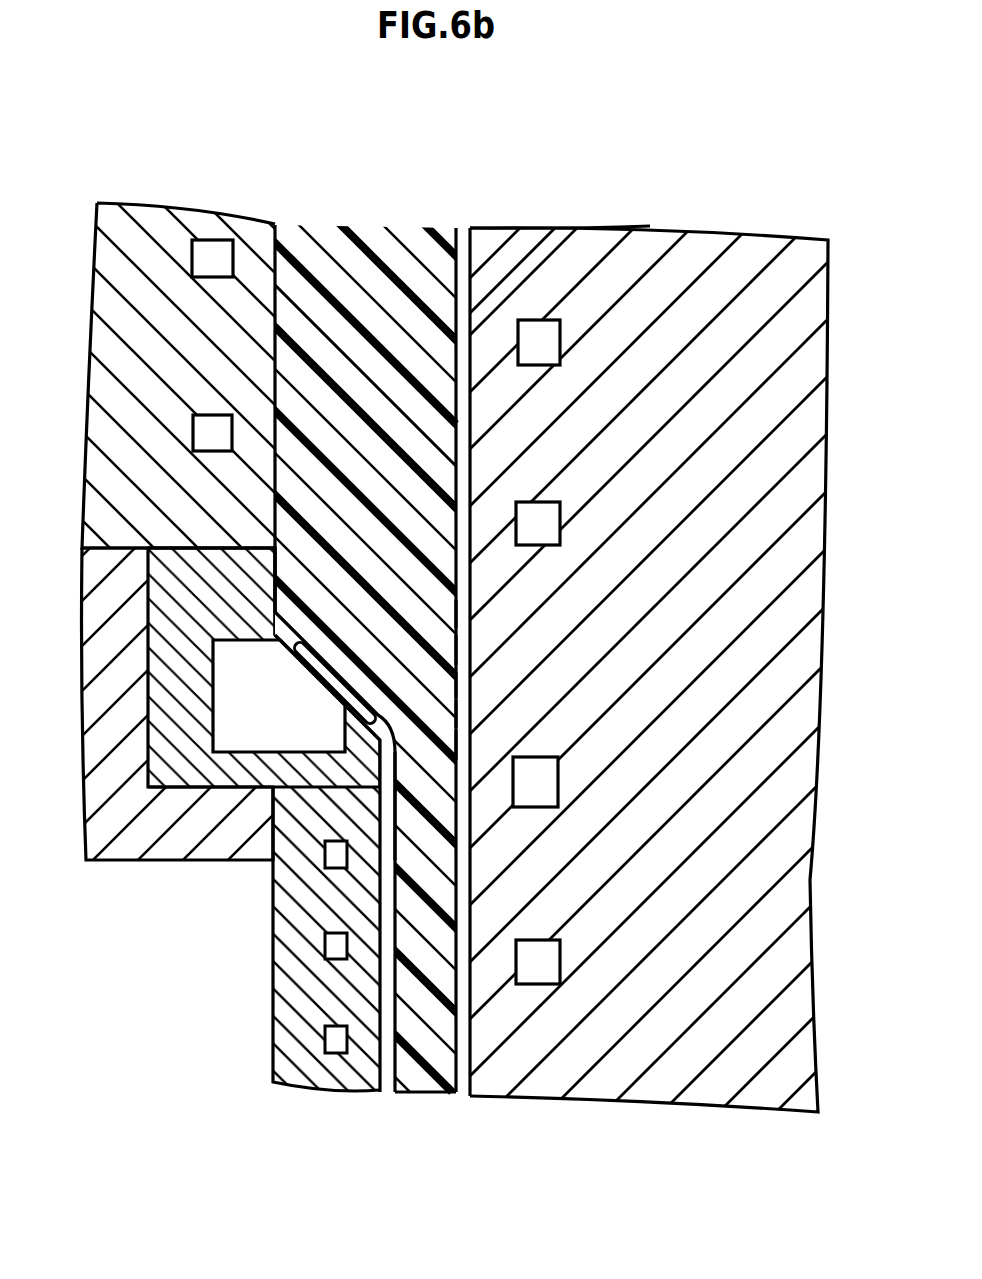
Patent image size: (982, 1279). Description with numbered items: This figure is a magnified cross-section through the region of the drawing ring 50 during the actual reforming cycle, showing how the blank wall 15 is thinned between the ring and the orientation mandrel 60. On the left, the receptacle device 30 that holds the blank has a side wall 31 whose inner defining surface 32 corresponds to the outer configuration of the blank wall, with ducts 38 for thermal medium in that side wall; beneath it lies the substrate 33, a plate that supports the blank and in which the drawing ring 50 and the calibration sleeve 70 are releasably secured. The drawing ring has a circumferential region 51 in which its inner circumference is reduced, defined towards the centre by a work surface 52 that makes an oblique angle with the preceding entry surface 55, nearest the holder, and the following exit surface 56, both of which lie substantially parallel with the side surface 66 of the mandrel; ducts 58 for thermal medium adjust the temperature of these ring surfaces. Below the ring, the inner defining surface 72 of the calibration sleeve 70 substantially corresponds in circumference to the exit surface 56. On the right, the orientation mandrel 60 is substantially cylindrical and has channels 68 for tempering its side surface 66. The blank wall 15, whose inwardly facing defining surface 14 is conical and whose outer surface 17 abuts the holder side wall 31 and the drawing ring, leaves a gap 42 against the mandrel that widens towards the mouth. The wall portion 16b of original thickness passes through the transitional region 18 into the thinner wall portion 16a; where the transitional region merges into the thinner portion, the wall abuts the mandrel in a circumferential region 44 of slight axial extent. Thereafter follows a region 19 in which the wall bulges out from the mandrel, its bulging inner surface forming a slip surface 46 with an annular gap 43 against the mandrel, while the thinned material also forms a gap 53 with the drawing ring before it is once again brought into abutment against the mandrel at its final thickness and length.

The inwardly facing defining surface 14 is at (484, 252).
The wall 15 is at (398, 300).
The thinner wall portion 16a is at (440, 1050).
The wall portion of original thickness 16b is at (355, 248).
The outer surface of the wall 17 is at (282, 256).
The transitional region 18 is at (476, 622).
The region 19 is at (476, 742).
The receptacle device 30 is at (132, 250).
The side wall 31 is at (160, 360).
The inner defining surface 32 is at (292, 268).
The substrate 33 is at (126, 842).
The ducts 38 is at (214, 415).
The gap 42 is at (463, 246).
The annular gap 43 is at (476, 700).
The circumferential region 44 is at (476, 662).
The slip surface 46 is at (466, 690).
The drawing ring 50 is at (215, 790).
The circumferential region 51 is at (345, 692).
The work surface 52 is at (302, 666).
The gap 53 is at (387, 762).
The entry surface 55 is at (270, 572).
The exit surface 56 is at (398, 782).
The ducts 58 is at (224, 722).
The orientation mandrel 60 is at (645, 268).
The side surface 66 is at (478, 280).
The channels 68 is at (545, 503).
The calibration sleeve 70 is at (282, 1045).
The inner defining surface 72 is at (385, 1092).